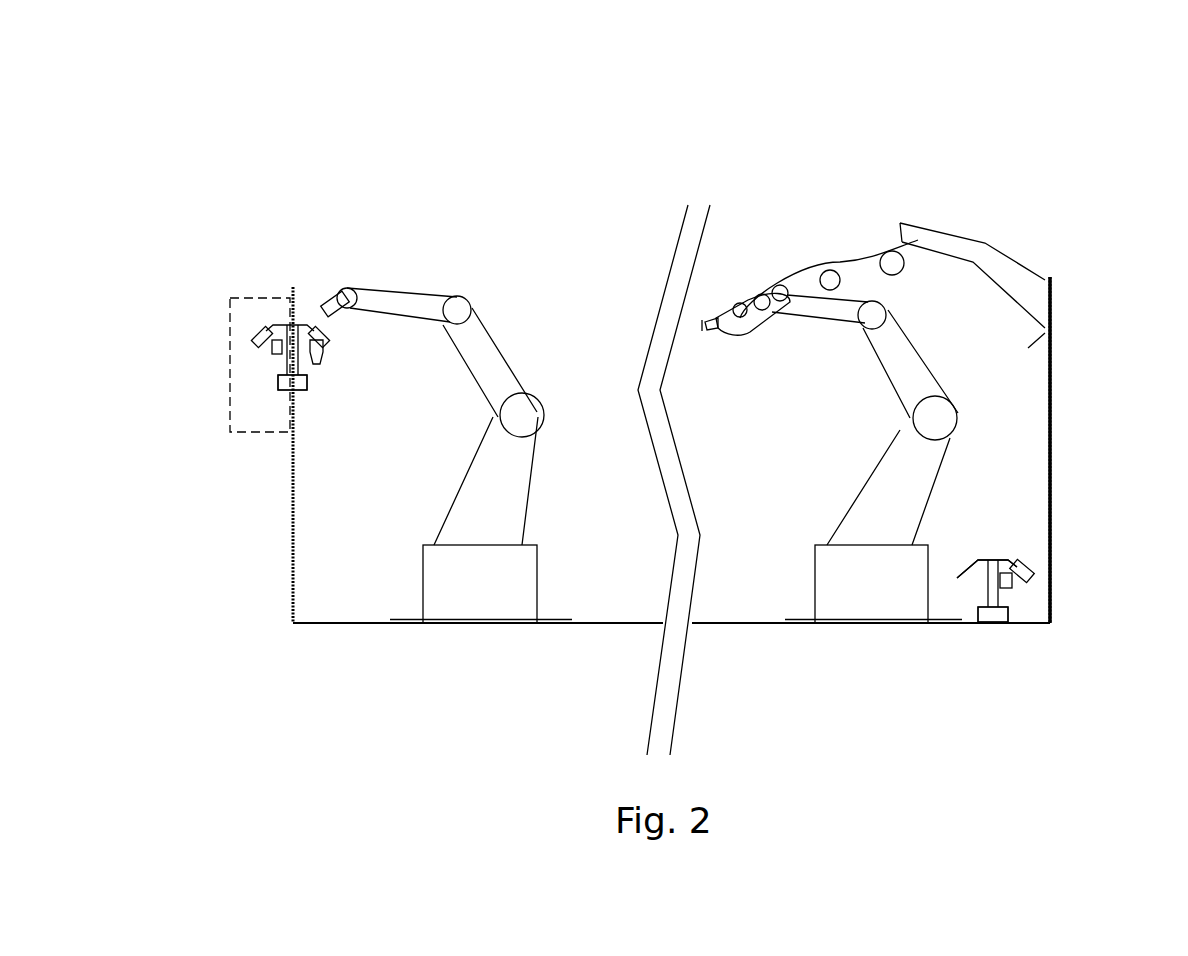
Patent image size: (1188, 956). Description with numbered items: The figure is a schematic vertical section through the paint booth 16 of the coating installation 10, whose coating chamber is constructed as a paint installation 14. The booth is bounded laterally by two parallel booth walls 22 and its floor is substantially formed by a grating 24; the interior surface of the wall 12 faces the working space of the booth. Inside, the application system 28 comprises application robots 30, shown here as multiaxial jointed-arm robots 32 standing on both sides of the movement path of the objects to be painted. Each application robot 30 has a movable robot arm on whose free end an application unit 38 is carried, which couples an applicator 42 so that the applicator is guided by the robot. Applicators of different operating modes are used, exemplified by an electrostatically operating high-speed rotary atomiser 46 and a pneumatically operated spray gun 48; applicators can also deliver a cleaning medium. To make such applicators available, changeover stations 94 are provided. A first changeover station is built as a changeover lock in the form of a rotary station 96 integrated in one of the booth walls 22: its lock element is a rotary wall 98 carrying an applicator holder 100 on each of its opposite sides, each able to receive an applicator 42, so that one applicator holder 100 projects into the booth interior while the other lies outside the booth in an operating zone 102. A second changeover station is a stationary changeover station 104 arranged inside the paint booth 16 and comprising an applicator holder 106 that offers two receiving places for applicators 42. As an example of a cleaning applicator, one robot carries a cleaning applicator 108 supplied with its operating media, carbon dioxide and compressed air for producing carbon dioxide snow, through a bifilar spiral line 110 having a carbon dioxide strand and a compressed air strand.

The coating installation 10 is at (997, 130).
The booth wall 12 is at (1063, 383).
The paint installation 14 is at (1080, 170).
The paint booth 16 is at (1063, 447).
The booth wall 22 is at (293, 520).
The grating 24 is at (615, 625).
The application system 28 is at (785, 155).
The application robot 30 is at (468, 590).
The multiaxial jointed-arm robot 32 is at (512, 502).
The application unit 38 is at (765, 335).
The applicator 42 is at (258, 357).
The high-speed rotary atomiser 46 is at (329, 339).
The spray gun 48 is at (267, 338).
The changeover station 94 is at (287, 405).
The rotary station 96 is at (277, 383).
The rotary wall 98 is at (292, 338).
The applicator holder 100 is at (286, 323).
The operating zone 102 is at (226, 285).
The stationary changeover station 104 is at (1001, 620).
The applicator holder 106 is at (995, 560).
The cleaning applicator 108 is at (738, 330).
The spiral line 110 is at (835, 262).